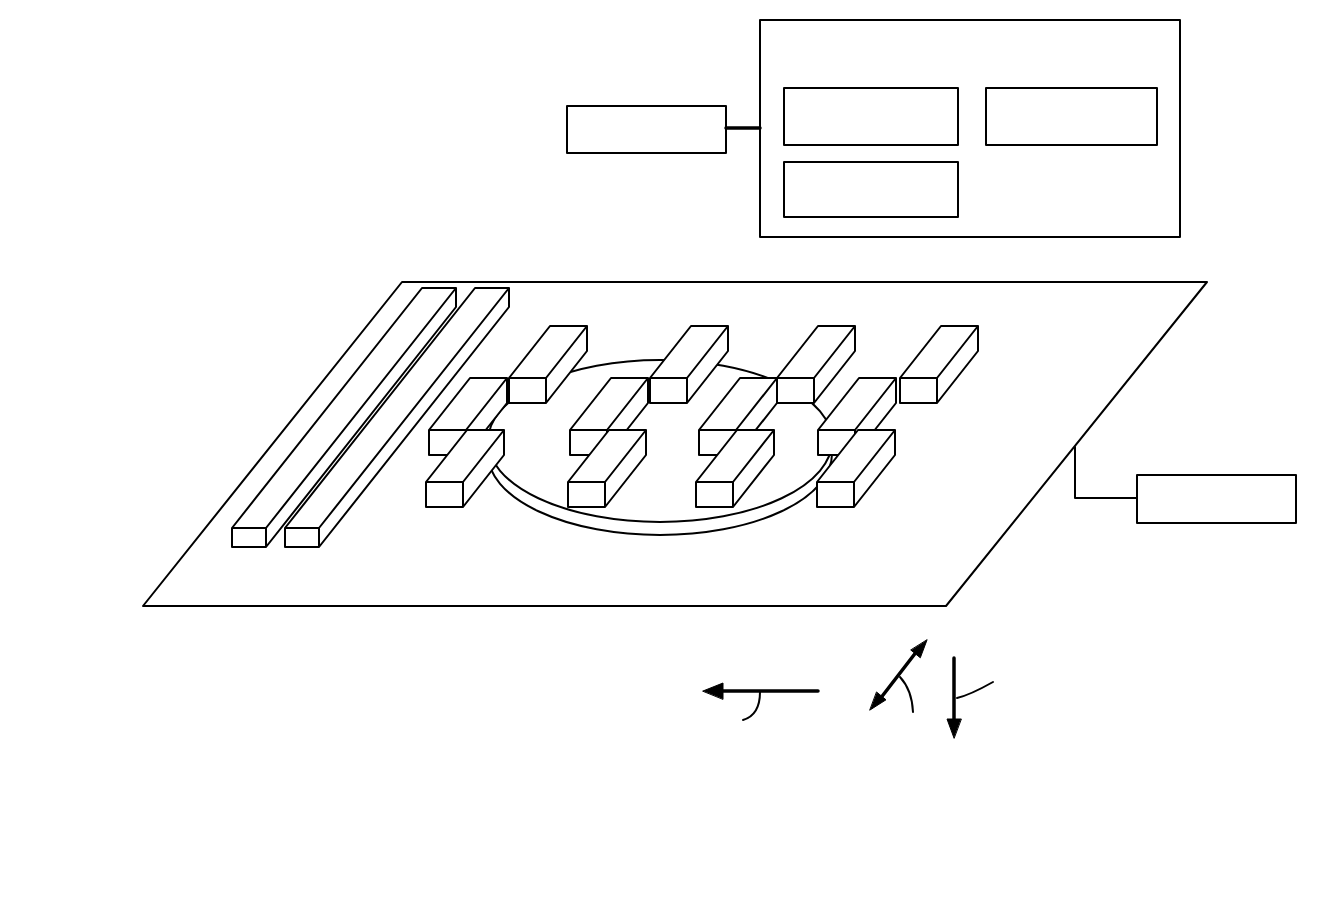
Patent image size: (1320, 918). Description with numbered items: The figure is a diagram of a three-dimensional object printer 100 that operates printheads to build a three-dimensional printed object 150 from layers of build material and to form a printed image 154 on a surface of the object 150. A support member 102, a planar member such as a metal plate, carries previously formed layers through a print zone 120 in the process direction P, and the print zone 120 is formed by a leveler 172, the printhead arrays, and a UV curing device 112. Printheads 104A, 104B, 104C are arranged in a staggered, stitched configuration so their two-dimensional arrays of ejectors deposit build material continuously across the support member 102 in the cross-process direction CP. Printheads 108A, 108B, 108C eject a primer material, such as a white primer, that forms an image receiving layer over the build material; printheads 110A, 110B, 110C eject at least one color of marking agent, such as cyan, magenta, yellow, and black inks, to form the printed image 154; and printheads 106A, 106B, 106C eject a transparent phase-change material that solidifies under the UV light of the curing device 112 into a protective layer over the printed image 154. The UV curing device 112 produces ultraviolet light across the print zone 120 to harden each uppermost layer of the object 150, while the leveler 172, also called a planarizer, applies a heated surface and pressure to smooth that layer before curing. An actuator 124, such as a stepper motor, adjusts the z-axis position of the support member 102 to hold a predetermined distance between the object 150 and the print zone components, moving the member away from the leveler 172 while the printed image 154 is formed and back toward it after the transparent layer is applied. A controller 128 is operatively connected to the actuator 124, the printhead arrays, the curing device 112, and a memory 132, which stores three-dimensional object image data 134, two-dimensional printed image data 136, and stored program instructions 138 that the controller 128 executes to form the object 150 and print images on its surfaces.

The three-dimensional object printer 100 is at (290, 274).
The support member 102 is at (1102, 281).
The printhead 104A is at (960, 326).
The printhead 104B is at (877, 377).
The printhead 104C is at (833, 493).
The printhead 106A is at (835, 327).
The printhead 106B is at (760, 377).
The printhead 106C is at (713, 493).
The printhead 108A is at (708, 327).
The printhead 108B is at (628, 378).
The printhead 108C is at (583, 493).
The printhead 110A is at (570, 325).
The printhead 110B is at (446, 442).
The printhead 110C is at (443, 492).
The UV curing device 112 is at (440, 286).
The print zone 120 is at (547, 246).
The actuator 124 is at (1217, 523).
The controller 128 is at (647, 106).
The memory 132 is at (760, 47).
The 3D object image data 134 is at (870, 88).
The 2D printed image data 136 is at (1072, 88).
The stored program instructions 138 is at (958, 188).
The three-dimensional printed object 150 is at (525, 510).
The printed image 154 is at (660, 473).
The leveler 172 is at (488, 286).